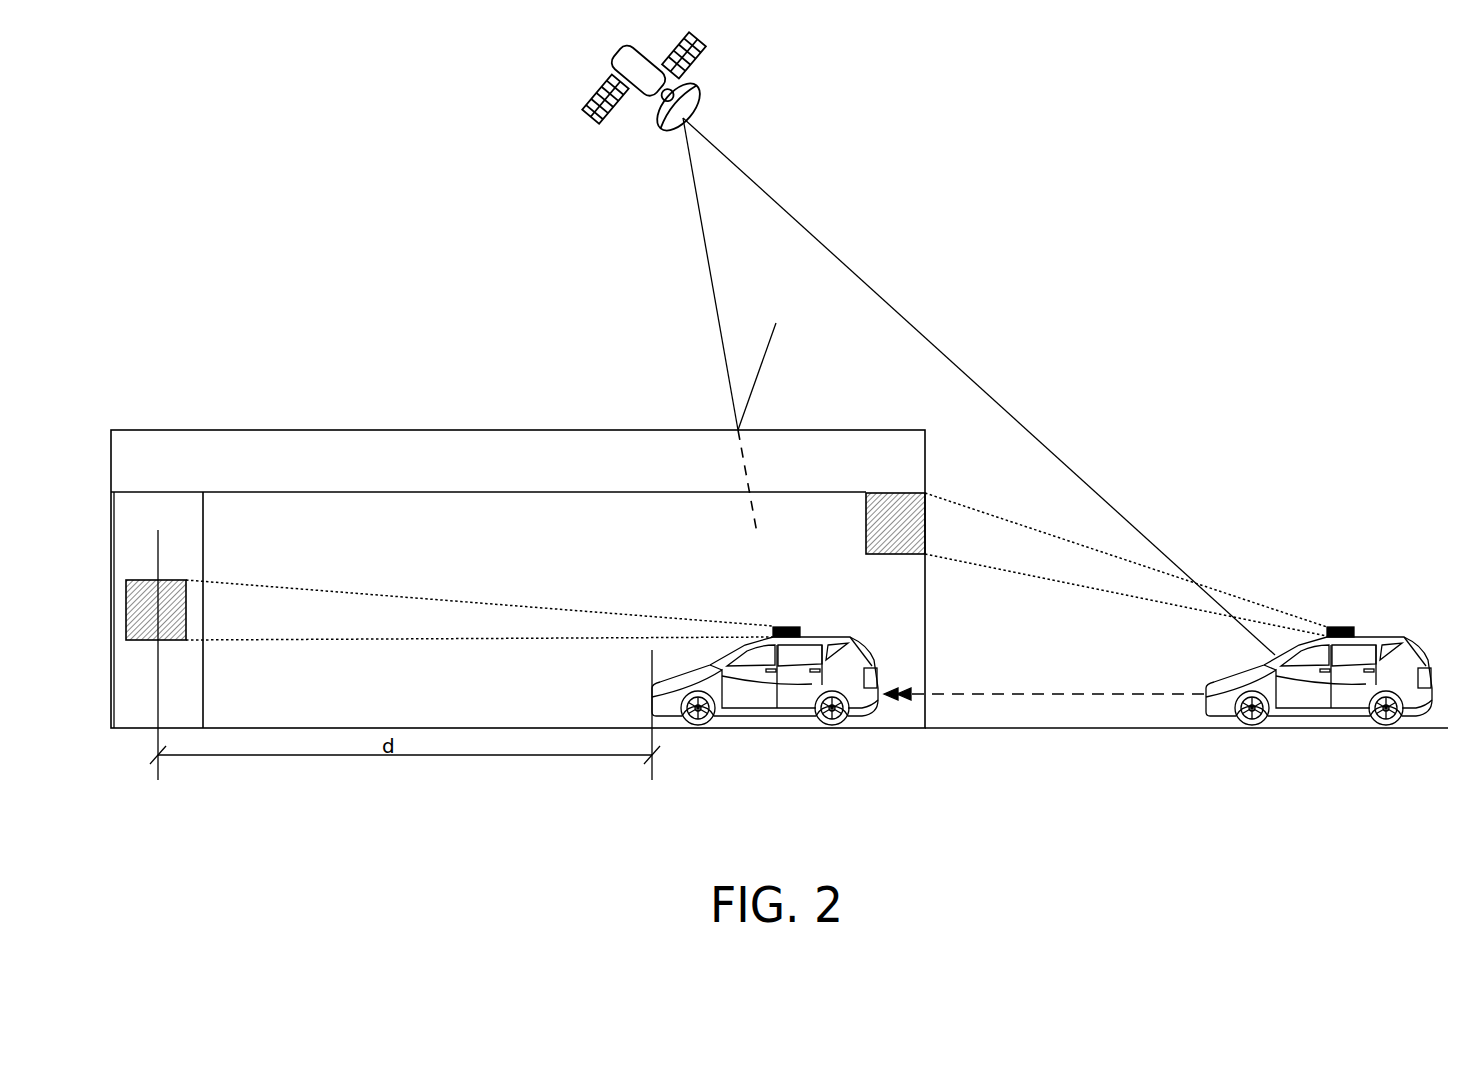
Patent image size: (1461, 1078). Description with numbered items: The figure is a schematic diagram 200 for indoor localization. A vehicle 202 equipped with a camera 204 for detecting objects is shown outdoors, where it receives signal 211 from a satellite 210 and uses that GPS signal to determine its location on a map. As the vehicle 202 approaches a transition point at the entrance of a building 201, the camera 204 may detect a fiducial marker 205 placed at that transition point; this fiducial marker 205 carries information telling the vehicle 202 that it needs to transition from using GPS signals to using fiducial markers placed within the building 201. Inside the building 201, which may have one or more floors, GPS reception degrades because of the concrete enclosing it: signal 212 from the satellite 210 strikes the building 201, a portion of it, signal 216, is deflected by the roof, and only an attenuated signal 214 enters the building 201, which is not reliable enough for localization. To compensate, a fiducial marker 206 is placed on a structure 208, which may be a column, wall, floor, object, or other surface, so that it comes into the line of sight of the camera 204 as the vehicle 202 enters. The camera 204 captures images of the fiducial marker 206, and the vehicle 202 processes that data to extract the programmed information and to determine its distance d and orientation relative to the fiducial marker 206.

The schematic diagram 200 is at (1286, 29).
The building 201 is at (384, 430).
The vehicle 202 is at (1056, 662).
The camera 204 is at (800, 626).
The fiducial marker 205 is at (927, 540).
The fiducial marker 206 is at (143, 580).
The structure 208 is at (203, 545).
The satellite 210 is at (628, 45).
The signal 211 is at (976, 372).
The signal 212 is at (700, 208).
The attenuated signal 214 is at (757, 533).
The deflected signal 216 is at (766, 340).